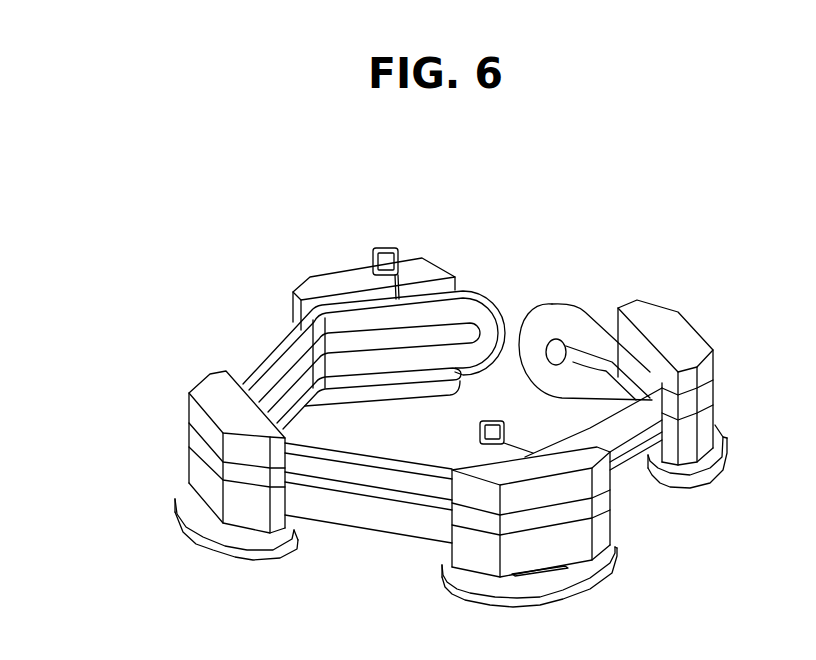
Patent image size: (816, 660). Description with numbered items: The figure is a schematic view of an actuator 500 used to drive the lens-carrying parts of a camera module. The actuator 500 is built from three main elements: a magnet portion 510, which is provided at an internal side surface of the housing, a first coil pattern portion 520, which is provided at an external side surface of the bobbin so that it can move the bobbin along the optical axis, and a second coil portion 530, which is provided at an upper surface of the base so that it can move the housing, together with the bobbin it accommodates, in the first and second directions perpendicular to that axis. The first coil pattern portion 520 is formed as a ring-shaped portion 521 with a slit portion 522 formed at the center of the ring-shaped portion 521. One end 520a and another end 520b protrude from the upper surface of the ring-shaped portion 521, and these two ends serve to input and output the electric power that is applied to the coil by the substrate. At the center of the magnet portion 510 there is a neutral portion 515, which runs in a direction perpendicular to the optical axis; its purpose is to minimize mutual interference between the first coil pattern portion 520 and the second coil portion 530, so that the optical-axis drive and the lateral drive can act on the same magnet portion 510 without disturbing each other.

The actuator 500 is at (177, 172).
The magnet portion 510 is at (183, 382).
The neutral portion 515 is at (197, 439).
The first coil pattern portion 520 is at (276, 334).
The one end 520a is at (386, 248).
The another end 520b is at (480, 433).
The ring-shaped portion 521 is at (573, 312).
The slit portion 522 is at (563, 348).
The second coil portion 530 is at (168, 511).